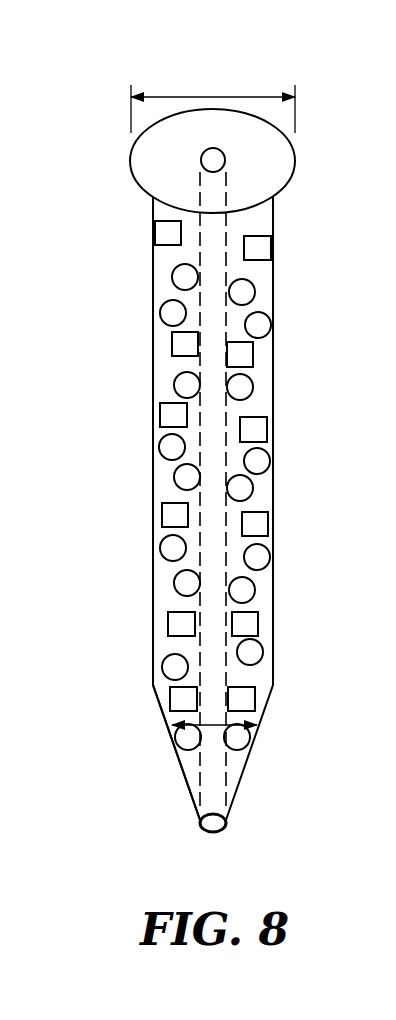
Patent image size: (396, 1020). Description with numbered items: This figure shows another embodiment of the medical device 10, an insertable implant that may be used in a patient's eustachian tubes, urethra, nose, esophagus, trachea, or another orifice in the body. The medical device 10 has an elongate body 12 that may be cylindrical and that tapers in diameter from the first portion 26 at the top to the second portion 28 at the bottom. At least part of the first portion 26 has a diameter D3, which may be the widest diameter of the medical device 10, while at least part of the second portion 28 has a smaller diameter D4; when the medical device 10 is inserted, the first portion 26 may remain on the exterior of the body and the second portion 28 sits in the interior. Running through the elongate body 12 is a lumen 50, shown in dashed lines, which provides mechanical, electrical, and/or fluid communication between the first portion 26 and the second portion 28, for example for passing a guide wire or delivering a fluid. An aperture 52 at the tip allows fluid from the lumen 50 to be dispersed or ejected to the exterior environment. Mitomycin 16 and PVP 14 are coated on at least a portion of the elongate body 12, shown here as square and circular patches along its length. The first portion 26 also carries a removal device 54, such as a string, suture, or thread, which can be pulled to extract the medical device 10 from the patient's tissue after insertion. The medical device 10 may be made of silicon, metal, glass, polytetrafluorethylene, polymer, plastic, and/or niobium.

The medical device 10 is at (213, 448).
The elongate body 12 is at (212, 448).
The PVP 14 is at (187, 477).
The mitomycin 16 is at (173, 414).
The first portion 26 is at (108, 197).
The second portion 28 is at (157, 785).
The lumen 50 is at (210, 248).
The aperture 52 is at (210, 831).
The removal device 54 is at (268, 150).
The diameter of the first portion D3 is at (213, 99).
The diameter of the second portion D4 is at (218, 724).